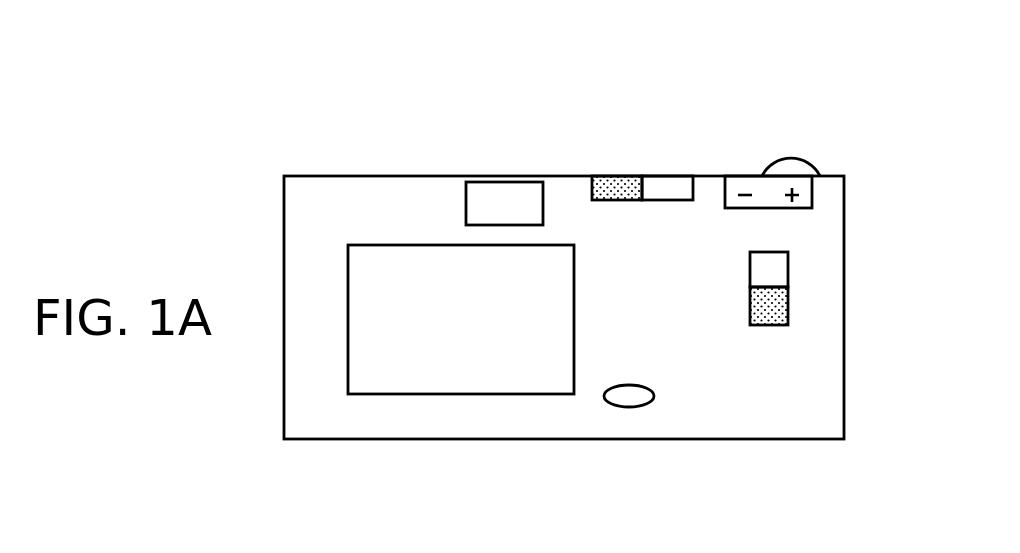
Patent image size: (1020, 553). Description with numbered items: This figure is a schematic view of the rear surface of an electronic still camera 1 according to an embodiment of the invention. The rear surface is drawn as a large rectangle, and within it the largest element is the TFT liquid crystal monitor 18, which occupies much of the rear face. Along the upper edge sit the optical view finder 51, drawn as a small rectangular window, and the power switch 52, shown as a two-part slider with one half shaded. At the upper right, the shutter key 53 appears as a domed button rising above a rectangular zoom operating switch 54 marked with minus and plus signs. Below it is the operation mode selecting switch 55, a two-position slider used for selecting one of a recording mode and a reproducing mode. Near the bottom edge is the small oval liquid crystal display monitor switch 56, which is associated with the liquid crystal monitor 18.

The electronic still camera 1 is at (733, 82).
The TFT liquid crystal monitor 18 is at (457, 377).
The optical view finder 51 is at (504, 190).
The power switch 52 is at (620, 190).
The shutter key 53 is at (790, 158).
The zoom operating switch 54 is at (812, 193).
The operation mode selecting switch 55 is at (788, 267).
The liquid crystal display monitor switch 56 is at (631, 407).